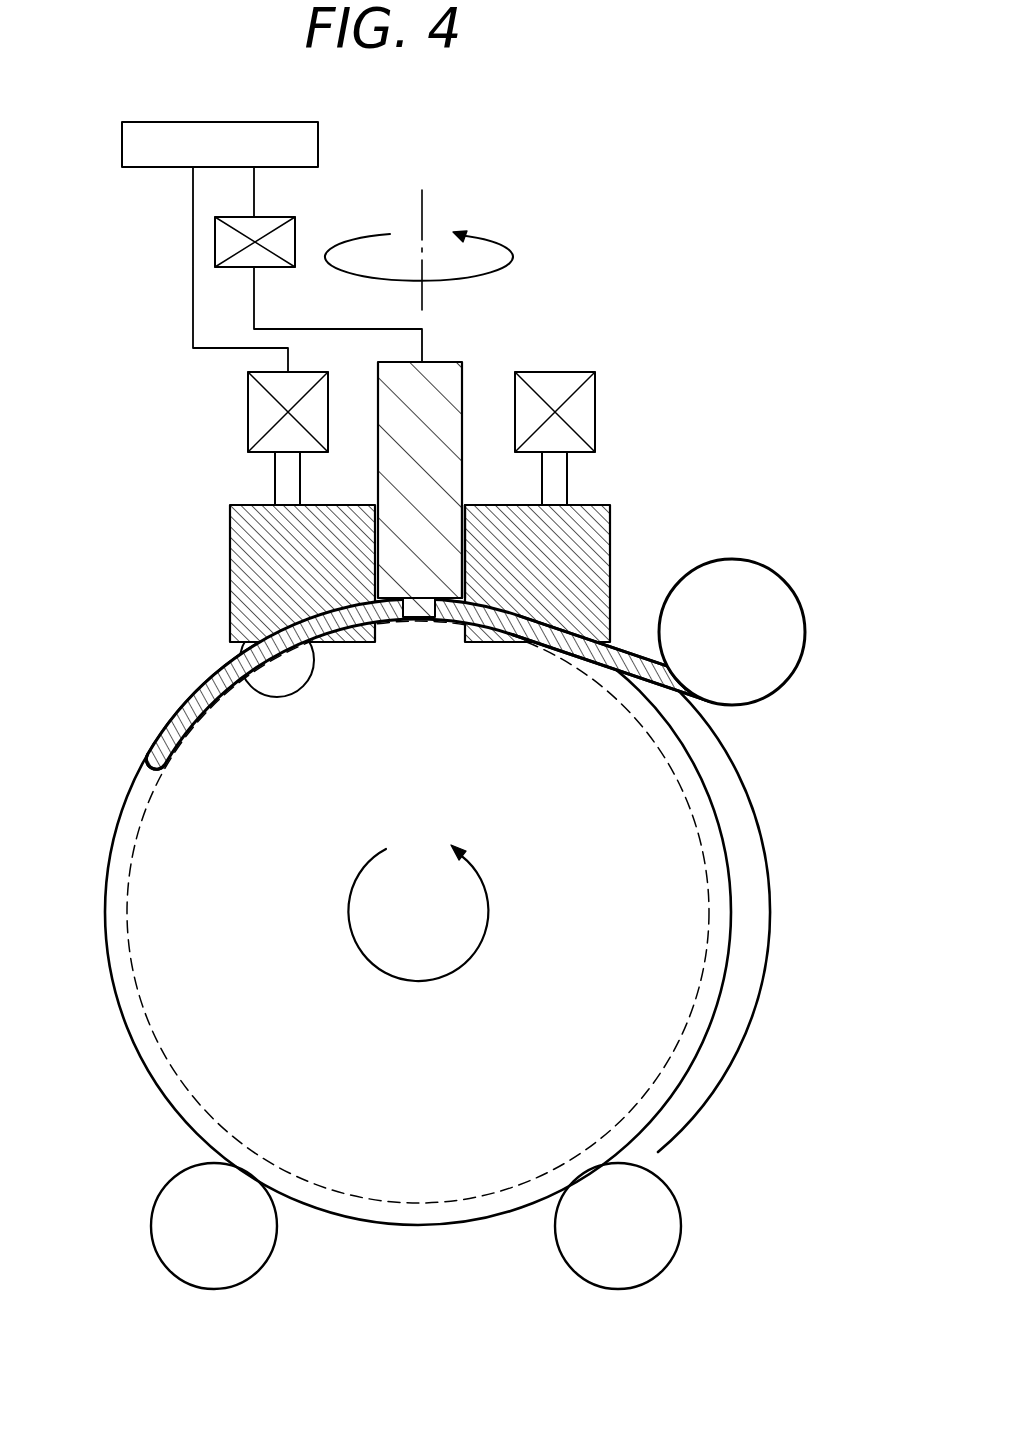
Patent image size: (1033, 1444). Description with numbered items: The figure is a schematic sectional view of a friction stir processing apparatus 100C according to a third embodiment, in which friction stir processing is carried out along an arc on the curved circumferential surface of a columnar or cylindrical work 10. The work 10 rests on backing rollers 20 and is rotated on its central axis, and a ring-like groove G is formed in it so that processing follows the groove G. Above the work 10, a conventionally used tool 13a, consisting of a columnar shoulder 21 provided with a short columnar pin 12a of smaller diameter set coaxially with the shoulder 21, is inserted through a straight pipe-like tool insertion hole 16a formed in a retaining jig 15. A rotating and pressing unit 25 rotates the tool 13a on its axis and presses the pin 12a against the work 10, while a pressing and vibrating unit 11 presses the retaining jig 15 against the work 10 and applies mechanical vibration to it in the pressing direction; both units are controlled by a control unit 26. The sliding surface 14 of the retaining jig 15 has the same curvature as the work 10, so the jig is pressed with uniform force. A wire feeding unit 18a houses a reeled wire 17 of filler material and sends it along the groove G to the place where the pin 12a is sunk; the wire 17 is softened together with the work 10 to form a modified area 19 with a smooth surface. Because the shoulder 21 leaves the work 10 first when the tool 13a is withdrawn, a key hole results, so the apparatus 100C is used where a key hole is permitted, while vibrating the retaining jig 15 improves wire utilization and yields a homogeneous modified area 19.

The work 10 is at (227, 872).
The pressing and vibrating unit 11 is at (264, 414).
The pin 12a is at (423, 623).
The tool 13a is at (450, 398).
The sliding surface 14 is at (222, 672).
The retaining jig 15 is at (273, 570).
The tool insertion hole 16a is at (465, 550).
The wire 17 is at (615, 665).
The wire feeding unit 18a is at (753, 634).
The modified area 19 is at (163, 733).
The backing rollers 20 is at (190, 1220).
The shoulder 21 is at (433, 588).
The rotating and pressing unit 25 is at (282, 217).
The control unit 26 is at (316, 150).
The friction stir processing apparatus 100C is at (637, 322).
The groove G is at (722, 902).